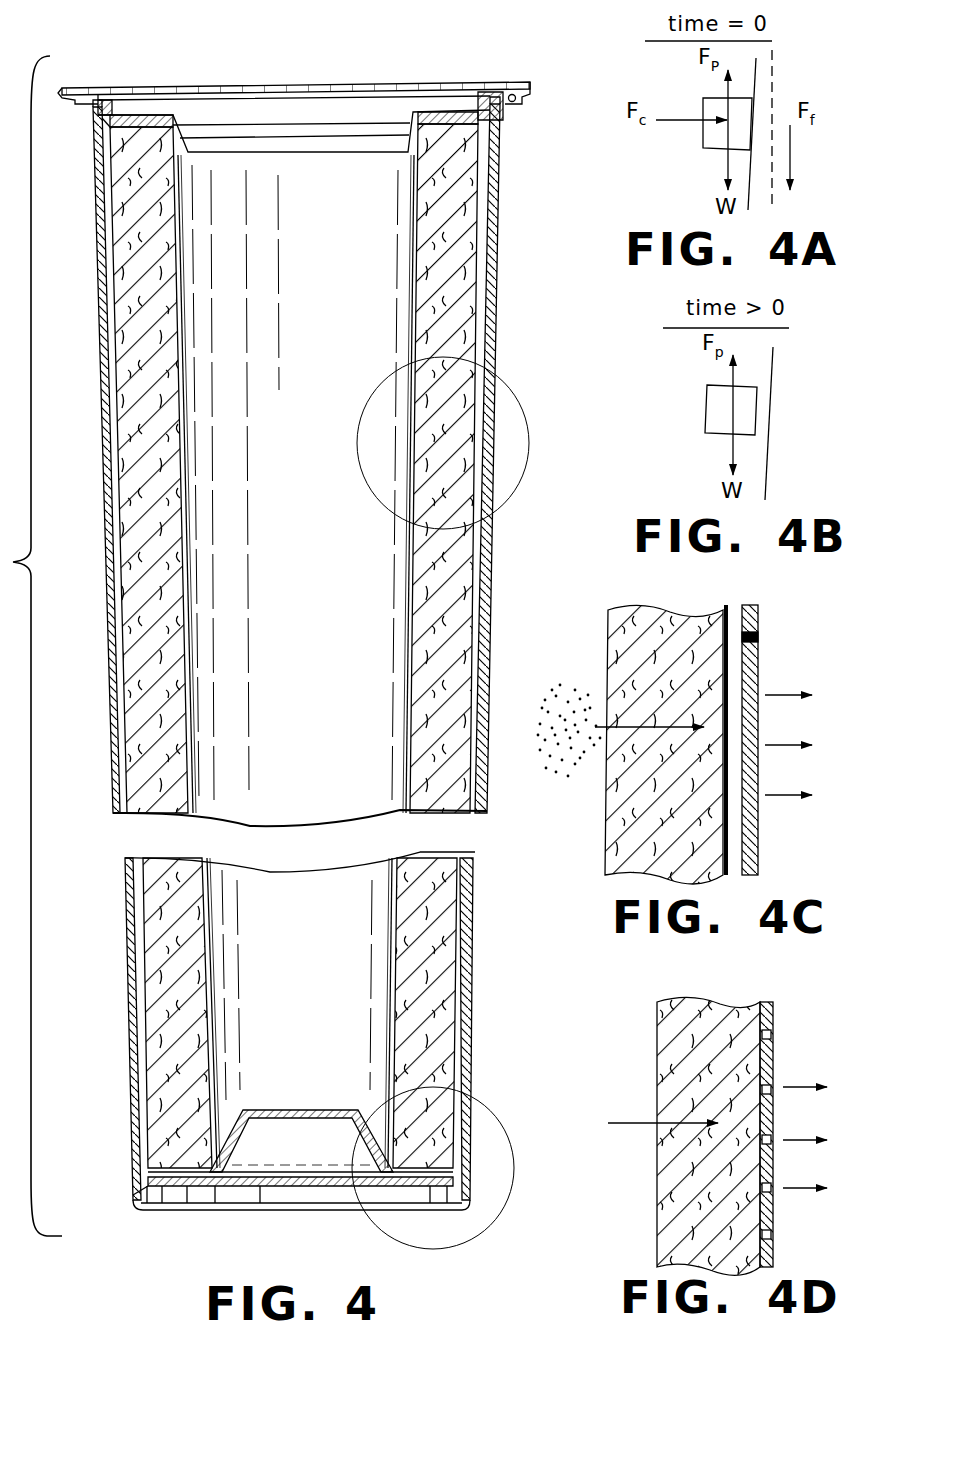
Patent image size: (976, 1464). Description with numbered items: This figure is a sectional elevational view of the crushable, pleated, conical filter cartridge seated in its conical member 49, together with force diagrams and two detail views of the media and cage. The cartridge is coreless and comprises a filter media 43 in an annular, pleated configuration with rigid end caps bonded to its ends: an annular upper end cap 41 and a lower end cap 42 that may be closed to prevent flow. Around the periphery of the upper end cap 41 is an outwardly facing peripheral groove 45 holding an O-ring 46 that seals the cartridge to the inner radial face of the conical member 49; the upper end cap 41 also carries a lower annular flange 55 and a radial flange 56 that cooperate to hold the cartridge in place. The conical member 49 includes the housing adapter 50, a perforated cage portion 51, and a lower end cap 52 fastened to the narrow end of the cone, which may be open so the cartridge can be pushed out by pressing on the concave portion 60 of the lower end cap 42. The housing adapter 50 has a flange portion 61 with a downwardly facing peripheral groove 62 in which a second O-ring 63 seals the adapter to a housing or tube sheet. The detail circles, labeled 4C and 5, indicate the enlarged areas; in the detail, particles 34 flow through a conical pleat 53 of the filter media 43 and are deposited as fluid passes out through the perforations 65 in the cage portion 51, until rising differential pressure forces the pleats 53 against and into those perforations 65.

In FIG. 4, the upper end cap 41 is at (427, 118).
In FIG. 4, the lower end cap 42 is at (152, 1176).
In FIG. 4, the filter media 43 is at (148, 718).
In FIG. 4, the outwardly facing peripheral groove 45 is at (105, 108).
In FIG. 4, the O-ring 46 is at (500, 113).
In FIG. 4, the conical member 49 is at (503, 292).
In FIG. 4, the housing adapter 50 is at (522, 78).
In FIG. 4, the cage portion 51 is at (490, 552).
In FIG. 4C, the cage portion 51 is at (757, 612).
In FIG. 4D, the cage portion 51 is at (772, 1006).
In FIG. 4, the lower end cap of conical member 52 is at (296, 1200).
In FIG. 4, the conical pleat 53 is at (137, 462).
In FIG. 4C, the conical pleat 53 is at (625, 650).
In FIG. 4D, the conical pleat 53 is at (668, 1052).
In FIG. 4, the lower annular flange 55 is at (108, 135).
In FIG. 4, the radial flange 56 is at (478, 136).
In FIG. 4, the concave portion 60 is at (285, 1112).
In FIG. 4, the flange portion 61 is at (92, 110).
In FIG. 4, the downwardly facing peripheral groove 62 is at (64, 94).
In FIG. 4, the second O-ring 63 is at (517, 96).
In FIG. 4C, the perforations 65 is at (758, 638).
In FIG. 4D, the perforations 65 is at (772, 1036).
In FIG. 4C, the particles 34 is at (570, 742).
In FIG. 4, the detail circle FIG. 5 is at (495, 1110).
In FIG. 4, the detail circle FIG. 4C is at (512, 392).